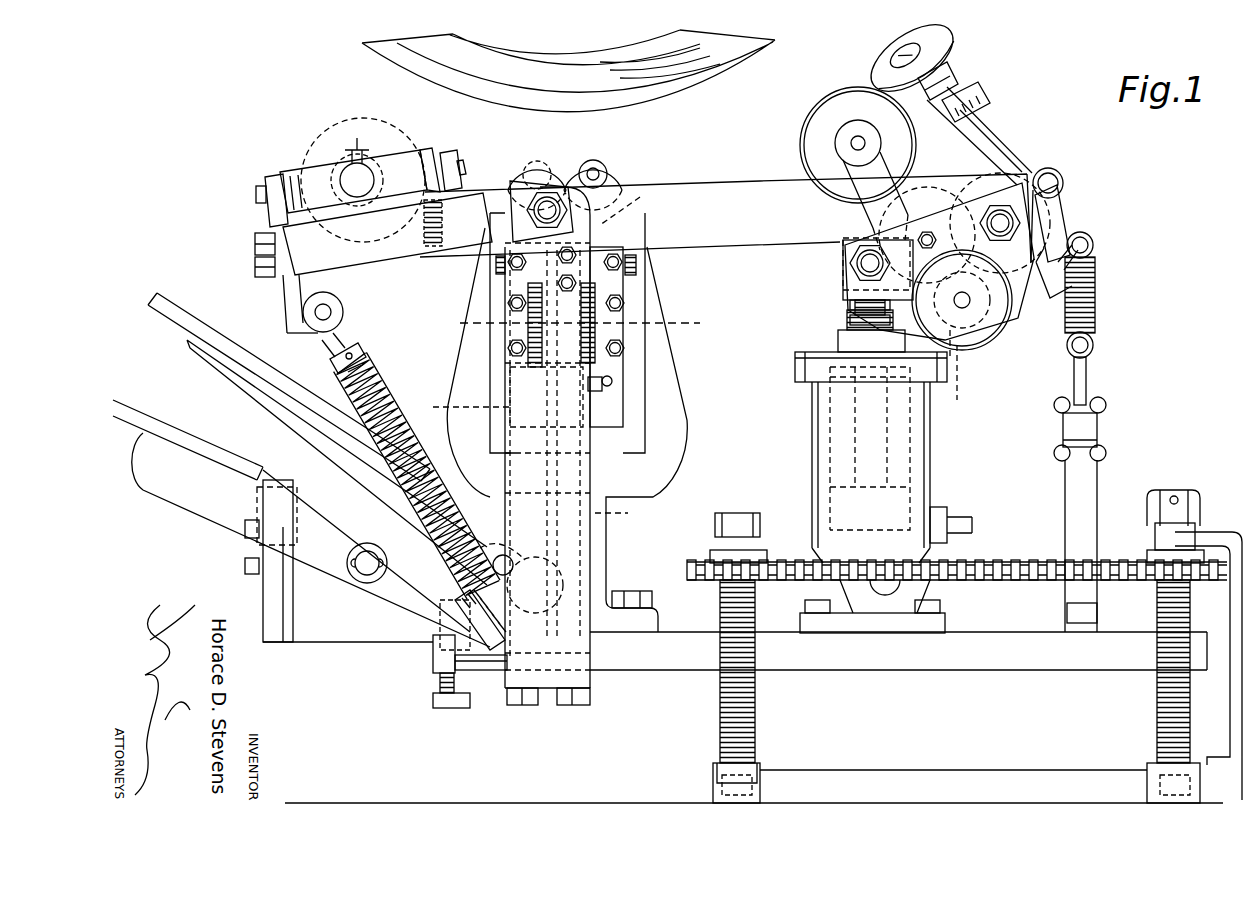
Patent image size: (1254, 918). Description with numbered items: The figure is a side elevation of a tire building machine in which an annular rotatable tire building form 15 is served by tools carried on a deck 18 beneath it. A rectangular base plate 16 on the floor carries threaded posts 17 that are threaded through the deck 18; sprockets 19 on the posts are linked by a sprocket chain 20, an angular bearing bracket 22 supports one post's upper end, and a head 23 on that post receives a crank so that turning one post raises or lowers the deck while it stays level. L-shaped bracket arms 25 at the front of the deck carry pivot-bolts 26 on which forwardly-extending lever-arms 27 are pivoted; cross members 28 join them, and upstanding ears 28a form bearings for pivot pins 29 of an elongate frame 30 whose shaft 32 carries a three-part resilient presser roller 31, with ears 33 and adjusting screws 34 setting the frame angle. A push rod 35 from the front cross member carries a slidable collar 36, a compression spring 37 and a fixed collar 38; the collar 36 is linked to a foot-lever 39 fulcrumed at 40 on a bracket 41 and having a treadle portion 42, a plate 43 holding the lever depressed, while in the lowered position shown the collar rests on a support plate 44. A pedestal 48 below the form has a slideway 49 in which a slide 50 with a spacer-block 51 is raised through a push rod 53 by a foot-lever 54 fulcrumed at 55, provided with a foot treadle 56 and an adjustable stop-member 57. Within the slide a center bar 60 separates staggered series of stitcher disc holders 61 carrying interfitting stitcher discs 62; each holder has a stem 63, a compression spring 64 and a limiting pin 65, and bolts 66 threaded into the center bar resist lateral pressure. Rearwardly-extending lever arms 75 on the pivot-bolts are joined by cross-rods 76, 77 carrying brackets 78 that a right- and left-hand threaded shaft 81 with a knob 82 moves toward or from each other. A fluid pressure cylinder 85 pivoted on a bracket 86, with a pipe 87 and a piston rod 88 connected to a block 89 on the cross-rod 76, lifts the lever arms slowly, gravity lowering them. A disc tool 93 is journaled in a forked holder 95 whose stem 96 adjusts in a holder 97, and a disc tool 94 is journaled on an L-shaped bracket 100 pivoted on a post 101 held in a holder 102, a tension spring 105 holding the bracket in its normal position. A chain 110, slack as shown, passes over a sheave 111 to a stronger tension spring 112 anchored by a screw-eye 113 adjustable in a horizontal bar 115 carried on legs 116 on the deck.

The tire building form 15 is at (425, 53).
The base plate 16 is at (921, 768).
The threaded posts 17 is at (757, 708).
The deck 18 is at (608, 672).
The sprockets 19 is at (710, 556).
The sprocket chain 20 is at (1012, 561).
The bearing bracket 22 is at (1228, 700).
The head 23 is at (1166, 490).
The bracket arms 25 is at (590, 522).
The pivot-bolts 26 is at (530, 196).
The lever-arms 27 is at (378, 272).
The cross members 28 is at (278, 280).
The upstanding ears 28a is at (450, 160).
The pivot pins 29 is at (256, 198).
The frame 30 is at (288, 180).
The presser roller 31 is at (335, 138).
The shaft 32 is at (375, 170).
The laterally projecting ears 33 is at (425, 245).
The adjusting screws 34 is at (296, 316).
The push rod 35 is at (372, 373).
The slidable collar 36 is at (492, 640).
The compression spring 37 is at (402, 385).
The collar 38 is at (330, 361).
The foot-lever 39 is at (210, 522).
The fulcrum 40 is at (364, 551).
The bracket 41 is at (278, 645).
The treadle portion 42 is at (205, 440).
The plate 43 is at (258, 580).
The support plate 44 is at (472, 670).
The pedestal 48 is at (683, 470).
The slideway 49 is at (622, 411).
The slide 50 is at (625, 292).
The spacer-block 51 is at (462, 410).
The push rod 53 is at (625, 513).
The foot-lever 54 is at (283, 425).
The fulcrum 55 is at (498, 556).
The foot treadle 56 is at (160, 298).
The stop-member 57 is at (433, 705).
The center bar 60 is at (640, 197).
The stitcher disc holders 61 is at (612, 176).
The stitcher disc 62 is at (582, 150).
The stem 63 is at (603, 388).
The compression spring 64 is at (569, 328).
The pin 65 is at (612, 380).
The bolts 66 is at (496, 267).
The lever arms 75 is at (725, 192).
The cross-rod 76 is at (850, 278).
The cross-rod 77 is at (990, 215).
The brackets 78 is at (843, 258).
The shaft 81 is at (995, 332).
The knob 82 is at (972, 328).
The cylinder 85 is at (933, 432).
The bracket 86 is at (900, 592).
The pipe 87 is at (955, 520).
The piston rod 88 is at (855, 447).
The block 89 is at (845, 238).
The tool 93 is at (822, 118).
The tool 94 is at (953, 45).
The forked holder 95 is at (855, 152).
The stem 96 is at (964, 365).
The holder 97 is at (927, 225).
The L-shaped bracket 100 is at (957, 88).
The post 101 is at (1003, 148).
The holder 102 is at (1052, 172).
The tension spring 105 is at (993, 114).
The chain 110 is at (1048, 305).
The sheave 111 is at (1075, 245).
The tension spring 112 is at (1097, 288).
The screw-eye 113 is at (1088, 380).
The horizontal bar 115 is at (1098, 432).
The legs 116 is at (1065, 498).